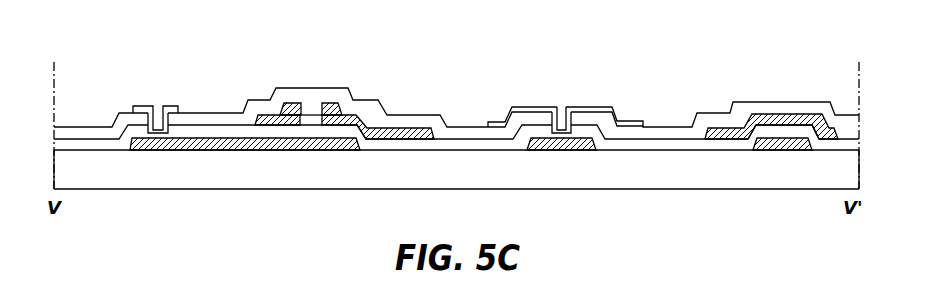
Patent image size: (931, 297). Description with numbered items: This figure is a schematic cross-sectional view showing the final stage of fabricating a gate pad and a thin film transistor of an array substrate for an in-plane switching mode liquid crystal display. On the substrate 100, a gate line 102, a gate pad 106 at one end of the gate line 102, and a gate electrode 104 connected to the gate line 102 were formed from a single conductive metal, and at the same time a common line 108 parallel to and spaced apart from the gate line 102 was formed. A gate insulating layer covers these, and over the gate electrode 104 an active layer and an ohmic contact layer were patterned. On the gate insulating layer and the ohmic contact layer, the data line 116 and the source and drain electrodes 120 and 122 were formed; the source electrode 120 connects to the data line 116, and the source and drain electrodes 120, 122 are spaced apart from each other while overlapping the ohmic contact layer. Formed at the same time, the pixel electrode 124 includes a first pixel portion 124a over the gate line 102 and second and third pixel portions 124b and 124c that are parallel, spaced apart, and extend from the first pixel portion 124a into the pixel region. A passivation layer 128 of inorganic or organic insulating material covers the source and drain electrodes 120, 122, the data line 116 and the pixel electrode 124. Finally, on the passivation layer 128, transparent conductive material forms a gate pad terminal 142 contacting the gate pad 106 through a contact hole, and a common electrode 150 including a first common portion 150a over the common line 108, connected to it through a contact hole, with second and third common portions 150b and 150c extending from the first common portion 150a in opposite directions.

The substrate 100 is at (492, 181).
The gate line 102 is at (222, 151).
The gate electrode 104 is at (325, 151).
The gate pad 106 is at (162, 151).
The common line 108 is at (561, 151).
The data line 116 is at (258, 118).
The source electrode 120 is at (295, 103).
The drain electrode 122 is at (329, 103).
The pixel electrode 124 is at (765, 78).
The first pixel portion 124a is at (408, 130).
The second pixel portion 124b is at (718, 128).
The third pixel portion 124c is at (778, 114).
The passivation layer 128 is at (205, 112).
The gate pad terminal 142 is at (175, 106).
The common electrode 150 is at (565, 73).
The first common portion 150a is at (561, 107).
The second common portion 150b is at (605, 107).
The third common portion 150c is at (514, 107).